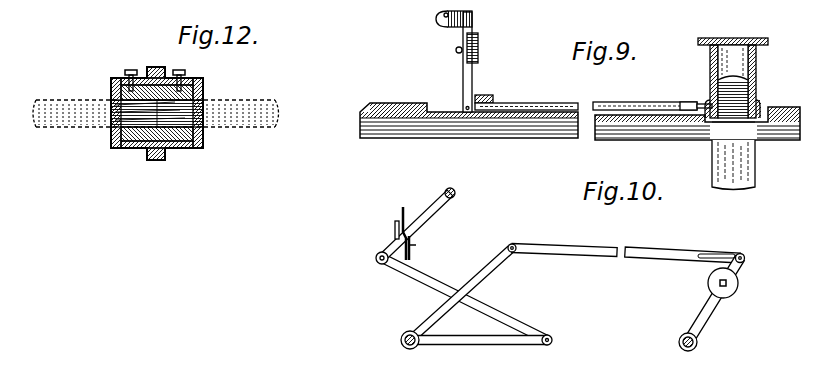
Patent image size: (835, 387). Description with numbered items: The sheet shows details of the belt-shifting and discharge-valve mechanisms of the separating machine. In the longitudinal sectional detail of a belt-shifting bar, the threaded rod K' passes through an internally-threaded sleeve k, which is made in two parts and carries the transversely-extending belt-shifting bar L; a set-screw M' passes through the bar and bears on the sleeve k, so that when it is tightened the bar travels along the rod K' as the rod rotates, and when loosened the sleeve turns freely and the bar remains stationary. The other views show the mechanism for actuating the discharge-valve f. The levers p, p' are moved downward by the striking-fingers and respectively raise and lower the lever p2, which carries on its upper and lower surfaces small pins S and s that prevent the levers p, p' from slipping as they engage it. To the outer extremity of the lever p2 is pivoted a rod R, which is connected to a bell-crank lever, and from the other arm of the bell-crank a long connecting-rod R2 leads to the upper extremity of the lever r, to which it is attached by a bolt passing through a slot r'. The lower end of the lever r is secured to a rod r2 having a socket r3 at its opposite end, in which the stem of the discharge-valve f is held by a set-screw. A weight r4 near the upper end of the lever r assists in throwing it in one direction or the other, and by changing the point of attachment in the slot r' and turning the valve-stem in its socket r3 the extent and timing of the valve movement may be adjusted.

In FIG. 12, the internally-threaded sleeve k is at (111, 88).
In FIG. 12, the threaded rod K' is at (156, 97).
In FIG. 12, the set-screw M' is at (155, 62).
In FIG. 12, the belt-shifting bar L is at (165, 158).
In FIG. 9, the connecting-rod R2 is at (440, 18).
In FIG. 10, the connecting-rod R2 is at (545, 250).
In FIG. 9, the weight r4 is at (478, 39).
In FIG. 10, the weight r4 is at (738, 283).
In FIG. 9, the lever r is at (476, 62).
In FIG. 10, the lever r is at (714, 299).
In FIG. 9, the rod r2 is at (528, 102).
In FIG. 10, the rod r2 is at (698, 343).
In FIG. 9, the socket r3 is at (684, 102).
In FIG. 9, the discharge-valve f is at (757, 90).
In FIG. 10, the rod R is at (432, 342).
In FIG. 10, the lever p2 is at (440, 210).
In FIG. 10, the lever p is at (371, 277).
In FIG. 10, the lever p' is at (373, 226).
In FIG. 10, the pin s is at (406, 214).
In FIG. 10, the pins S is at (412, 249).
In FIG. 10, the slot r' is at (716, 241).